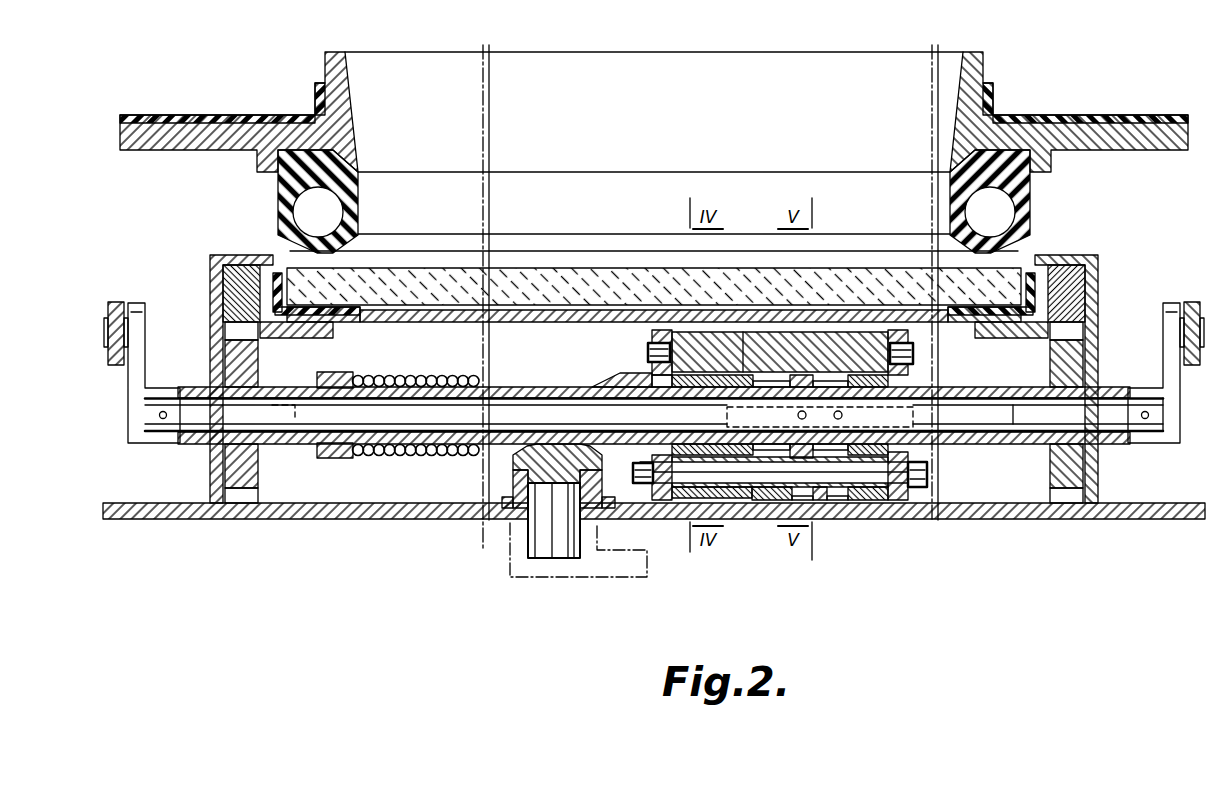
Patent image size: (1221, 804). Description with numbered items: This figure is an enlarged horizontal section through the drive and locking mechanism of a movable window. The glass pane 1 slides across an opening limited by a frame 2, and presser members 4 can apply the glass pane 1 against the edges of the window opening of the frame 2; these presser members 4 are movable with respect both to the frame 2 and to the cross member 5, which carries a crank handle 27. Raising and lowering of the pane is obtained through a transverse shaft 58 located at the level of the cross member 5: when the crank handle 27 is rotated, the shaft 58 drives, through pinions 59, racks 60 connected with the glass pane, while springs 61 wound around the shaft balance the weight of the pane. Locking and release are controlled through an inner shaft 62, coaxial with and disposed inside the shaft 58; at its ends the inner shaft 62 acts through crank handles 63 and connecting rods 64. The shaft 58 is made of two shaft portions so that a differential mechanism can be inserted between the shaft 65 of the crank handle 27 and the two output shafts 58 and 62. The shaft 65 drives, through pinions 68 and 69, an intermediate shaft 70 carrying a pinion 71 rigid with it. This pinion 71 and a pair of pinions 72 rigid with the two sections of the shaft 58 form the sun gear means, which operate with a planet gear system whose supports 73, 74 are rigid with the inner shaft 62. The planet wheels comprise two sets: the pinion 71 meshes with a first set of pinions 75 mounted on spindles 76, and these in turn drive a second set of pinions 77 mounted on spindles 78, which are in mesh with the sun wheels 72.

The glass pane 1 is at (287, 267).
The frame 2 is at (190, 150).
The presser members 4 is at (213, 274).
The cross member 5 is at (350, 519).
The crank handle 27 is at (650, 570).
The transverse shaft 58 is at (536, 389).
The pinions 59 is at (249, 361).
The racks 60 is at (237, 273).
The springs 61 is at (390, 377).
The inner shaft 62 is at (503, 413).
The crank handles 63 is at (142, 348).
The connecting rods 64 is at (115, 302).
The shaft of crank handle 65 is at (513, 498).
The pinion 68 is at (513, 459).
The pinion 69 is at (589, 373).
The intermediate shaft 70 is at (625, 373).
The pinion 71 is at (715, 380).
The pinions 72 is at (844, 380).
The support 73 is at (825, 502).
The support 74 is at (912, 341).
The planet wheels 75 is at (745, 345).
The spindles 76 is at (361, 208).
The planet wheels 77 is at (771, 502).
The spindles 78 is at (708, 480).